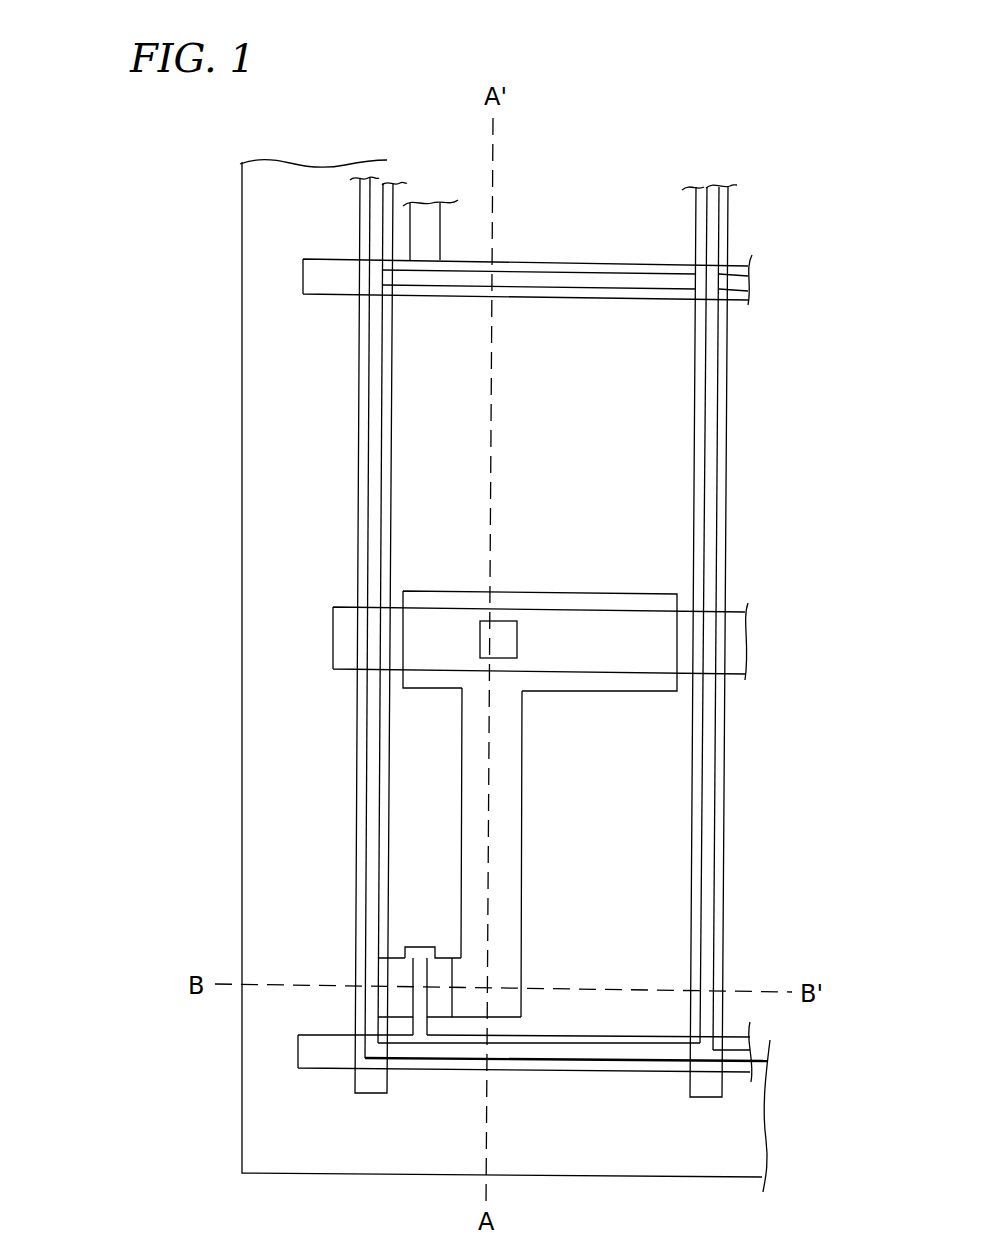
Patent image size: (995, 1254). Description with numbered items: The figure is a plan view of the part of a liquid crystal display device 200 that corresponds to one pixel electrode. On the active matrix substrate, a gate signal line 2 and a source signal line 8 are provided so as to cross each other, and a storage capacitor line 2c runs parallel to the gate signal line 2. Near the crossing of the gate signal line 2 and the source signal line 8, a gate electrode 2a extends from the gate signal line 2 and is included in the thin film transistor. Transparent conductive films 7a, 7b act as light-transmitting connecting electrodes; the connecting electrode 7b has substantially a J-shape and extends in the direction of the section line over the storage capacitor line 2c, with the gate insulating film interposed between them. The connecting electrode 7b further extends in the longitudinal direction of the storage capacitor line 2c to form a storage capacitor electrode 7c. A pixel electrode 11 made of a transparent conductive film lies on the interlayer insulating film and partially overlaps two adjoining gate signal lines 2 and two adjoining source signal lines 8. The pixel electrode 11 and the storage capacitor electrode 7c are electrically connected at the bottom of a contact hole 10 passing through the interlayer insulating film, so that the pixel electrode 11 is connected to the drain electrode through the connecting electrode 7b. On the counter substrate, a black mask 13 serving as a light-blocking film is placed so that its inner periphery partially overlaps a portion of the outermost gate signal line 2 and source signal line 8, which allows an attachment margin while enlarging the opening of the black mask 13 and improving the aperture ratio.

The pixel region of active matrix substrate 200 is at (757, 118).
The gate signal line 2 is at (733, 1073).
The gate electrode 2a is at (428, 205).
The storage capacitor line 2c is at (745, 650).
The transparent conductive film 7a is at (399, 962).
The connecting electrode 7b is at (510, 770).
The storage capacitor electrode 7c is at (667, 692).
The source signal line 8 is at (705, 1092).
The contact hole 10 is at (505, 633).
The pixel electrode 11 is at (668, 450).
The black mask 13 is at (285, 172).